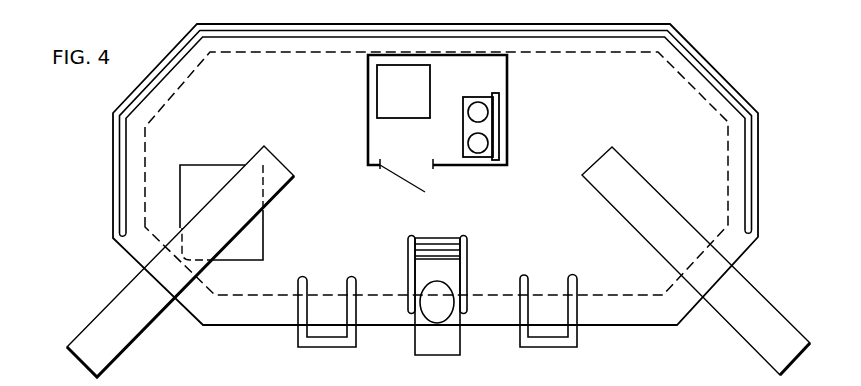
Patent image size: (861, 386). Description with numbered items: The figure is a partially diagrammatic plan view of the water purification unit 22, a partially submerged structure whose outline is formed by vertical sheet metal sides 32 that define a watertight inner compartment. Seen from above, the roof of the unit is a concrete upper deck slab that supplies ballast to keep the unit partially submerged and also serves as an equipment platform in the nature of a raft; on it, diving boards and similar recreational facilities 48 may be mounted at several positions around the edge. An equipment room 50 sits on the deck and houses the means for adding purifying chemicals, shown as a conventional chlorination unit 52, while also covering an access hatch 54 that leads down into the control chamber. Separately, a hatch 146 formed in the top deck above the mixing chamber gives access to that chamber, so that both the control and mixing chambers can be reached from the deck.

The water purification unit 22 is at (722, 64).
The vertical sheet metal sides 32 is at (186, 86).
The recreational facilities 48 is at (118, 346).
The equipment room 50 is at (508, 86).
The chlorination unit 52 is at (463, 129).
The access hatch 54 is at (416, 101).
The hatch 146 is at (264, 245).